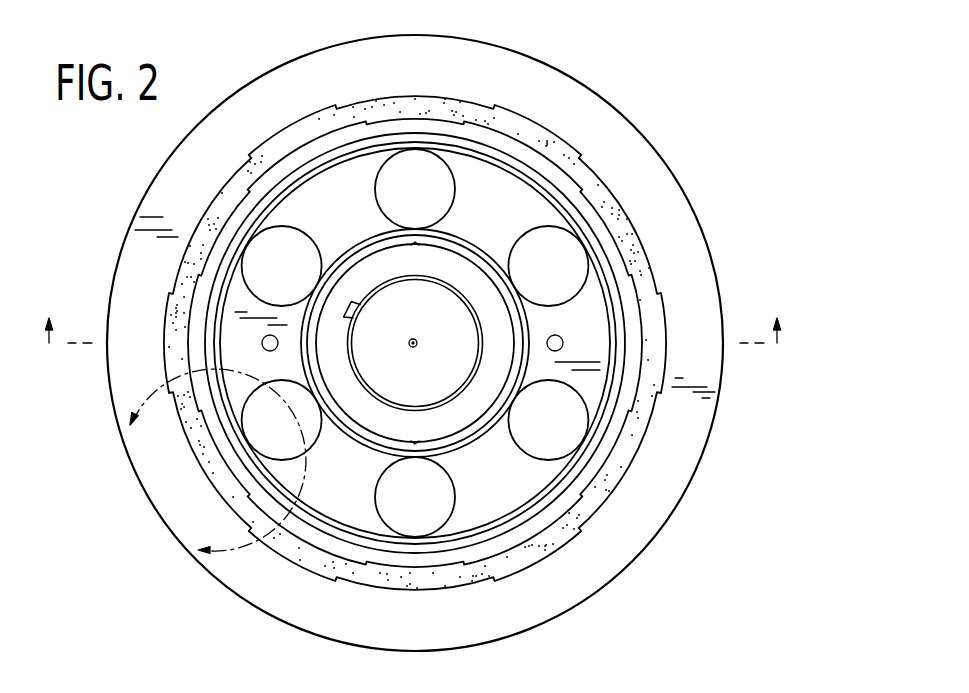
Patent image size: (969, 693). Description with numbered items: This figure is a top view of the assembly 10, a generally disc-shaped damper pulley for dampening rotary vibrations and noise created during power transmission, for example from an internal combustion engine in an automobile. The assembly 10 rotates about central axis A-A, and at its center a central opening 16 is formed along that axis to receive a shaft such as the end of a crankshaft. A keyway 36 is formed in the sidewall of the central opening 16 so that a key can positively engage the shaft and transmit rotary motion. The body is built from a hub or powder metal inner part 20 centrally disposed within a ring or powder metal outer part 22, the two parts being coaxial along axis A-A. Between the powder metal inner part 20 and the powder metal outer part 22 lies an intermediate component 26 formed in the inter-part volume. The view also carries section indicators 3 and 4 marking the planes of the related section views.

The assembly 10 is at (700, 104).
The powder metal outer part 22 is at (673, 220).
The intermediate component 26 is at (291, 137).
The powder metal inner part 20 is at (518, 490).
The central opening 16 is at (447, 374).
The keyway 36 is at (358, 307).
The section line 3- 3 is at (411, 348).
The section line 4- 4 is at (212, 479).